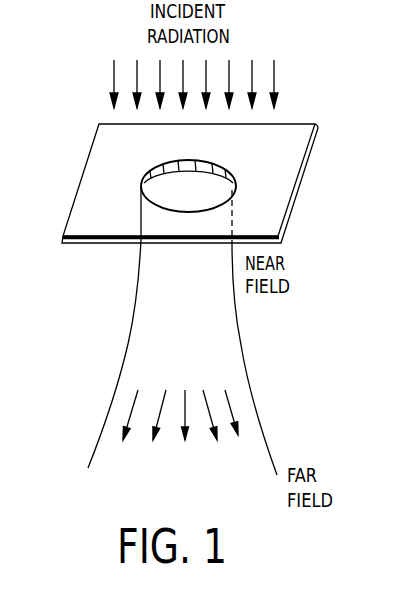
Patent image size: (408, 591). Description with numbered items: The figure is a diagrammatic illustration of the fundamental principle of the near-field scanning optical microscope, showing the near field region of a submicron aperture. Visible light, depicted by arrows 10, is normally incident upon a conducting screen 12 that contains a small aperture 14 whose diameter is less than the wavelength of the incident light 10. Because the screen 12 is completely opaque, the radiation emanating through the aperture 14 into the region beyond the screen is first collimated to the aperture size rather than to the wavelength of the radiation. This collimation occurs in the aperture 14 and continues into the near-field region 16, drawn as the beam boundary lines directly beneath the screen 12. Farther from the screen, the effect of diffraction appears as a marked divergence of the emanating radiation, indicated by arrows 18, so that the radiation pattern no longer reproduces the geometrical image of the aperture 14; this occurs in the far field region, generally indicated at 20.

The incident light 10 is at (287, 72).
The conducting screen 12 is at (292, 173).
The aperture 14 is at (147, 172).
The near-field region 16 is at (128, 266).
The diverging radiation arrows 18 is at (124, 409).
The far field region 20 is at (76, 458).